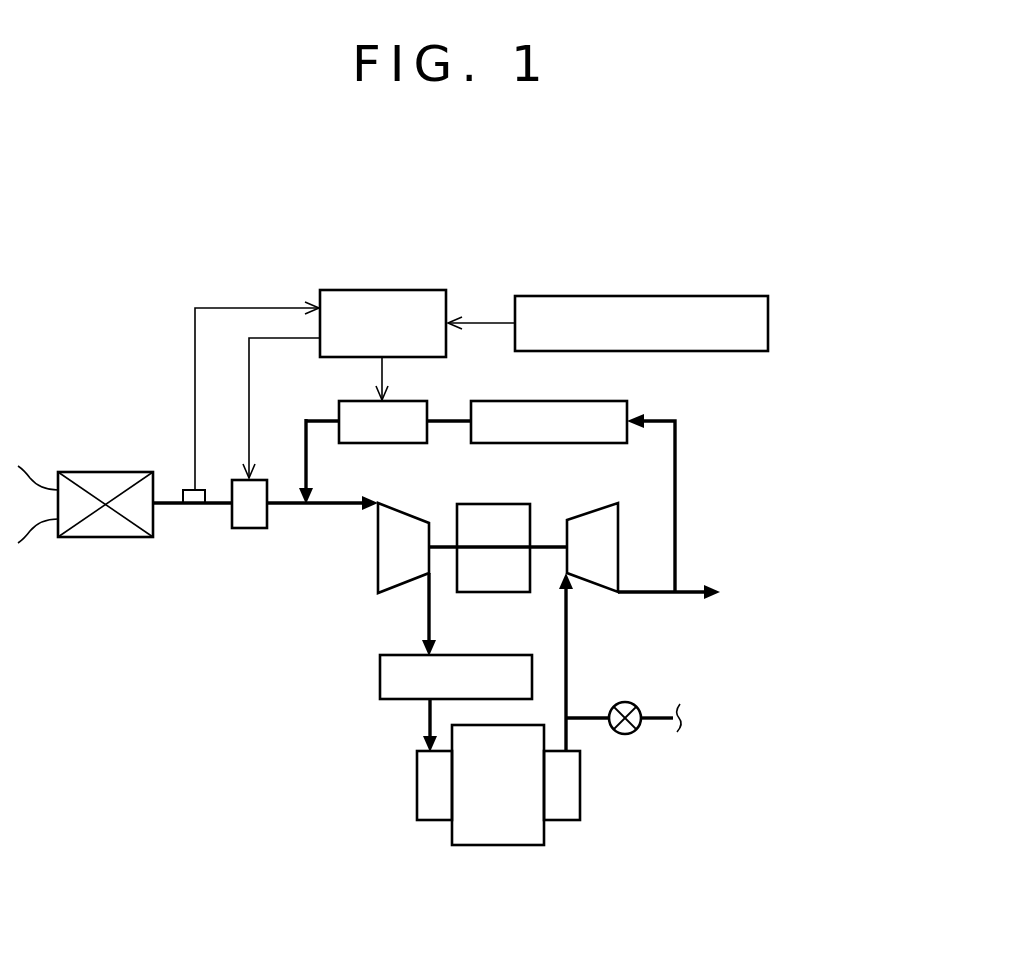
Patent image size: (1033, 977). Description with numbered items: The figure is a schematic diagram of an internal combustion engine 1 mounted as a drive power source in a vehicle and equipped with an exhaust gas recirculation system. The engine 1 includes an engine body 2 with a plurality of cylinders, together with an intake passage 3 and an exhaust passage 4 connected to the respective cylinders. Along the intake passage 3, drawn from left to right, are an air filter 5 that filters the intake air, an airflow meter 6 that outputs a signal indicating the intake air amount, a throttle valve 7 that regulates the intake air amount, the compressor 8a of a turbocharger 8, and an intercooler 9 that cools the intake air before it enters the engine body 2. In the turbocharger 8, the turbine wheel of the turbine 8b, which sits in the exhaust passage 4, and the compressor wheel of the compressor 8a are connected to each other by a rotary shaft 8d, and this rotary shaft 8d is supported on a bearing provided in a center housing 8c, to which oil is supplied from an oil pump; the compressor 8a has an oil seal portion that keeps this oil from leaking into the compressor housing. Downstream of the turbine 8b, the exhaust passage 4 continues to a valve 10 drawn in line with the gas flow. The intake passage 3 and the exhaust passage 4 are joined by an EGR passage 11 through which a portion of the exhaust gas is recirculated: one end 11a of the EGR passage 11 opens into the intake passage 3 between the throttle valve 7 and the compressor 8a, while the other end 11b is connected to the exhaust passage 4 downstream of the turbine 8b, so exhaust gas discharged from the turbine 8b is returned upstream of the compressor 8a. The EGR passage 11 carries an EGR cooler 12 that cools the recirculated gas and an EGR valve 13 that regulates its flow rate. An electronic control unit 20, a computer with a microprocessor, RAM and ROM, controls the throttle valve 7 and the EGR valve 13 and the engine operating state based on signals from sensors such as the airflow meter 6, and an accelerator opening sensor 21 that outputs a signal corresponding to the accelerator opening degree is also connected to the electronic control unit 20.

The internal combustion engine 1 is at (302, 686).
The engine body 2 is at (545, 838).
The intake passage 3 is at (326, 507).
The exhaust passage 4 is at (567, 645).
The air filter 5 is at (105, 537).
The airflow meter 6 is at (188, 490).
The throttle valve 7 is at (247, 528).
The turbocharger 8 is at (470, 542).
The compressor 8a is at (375, 578).
The turbine 8b is at (585, 519).
The center housing 8c is at (496, 503).
The rotary shaft 8d is at (493, 550).
The intercooler 9 is at (380, 673).
The exhaust throttle valve 10 is at (633, 704).
The EGR passage 11 is at (675, 455).
The one end of the EGR passage 11a is at (328, 494).
The other end of the EGR passage 11b is at (690, 577).
The EGR cooler 12 is at (527, 401).
The EGR valve 13 is at (406, 401).
The electronic control unit 20 is at (428, 290).
The accelerator opening sensor 21 is at (768, 323).